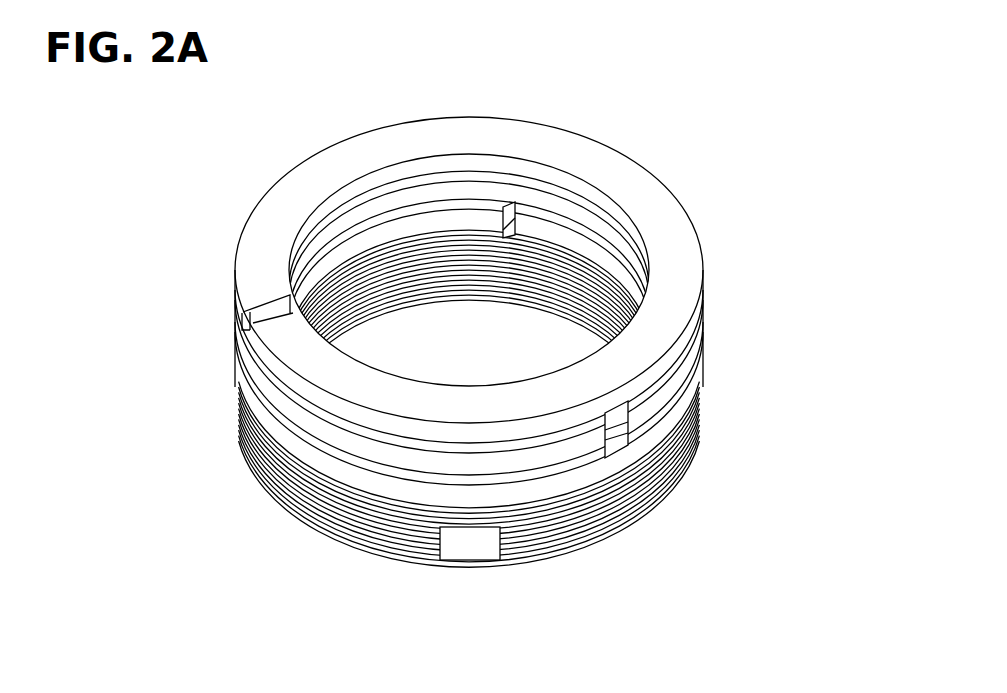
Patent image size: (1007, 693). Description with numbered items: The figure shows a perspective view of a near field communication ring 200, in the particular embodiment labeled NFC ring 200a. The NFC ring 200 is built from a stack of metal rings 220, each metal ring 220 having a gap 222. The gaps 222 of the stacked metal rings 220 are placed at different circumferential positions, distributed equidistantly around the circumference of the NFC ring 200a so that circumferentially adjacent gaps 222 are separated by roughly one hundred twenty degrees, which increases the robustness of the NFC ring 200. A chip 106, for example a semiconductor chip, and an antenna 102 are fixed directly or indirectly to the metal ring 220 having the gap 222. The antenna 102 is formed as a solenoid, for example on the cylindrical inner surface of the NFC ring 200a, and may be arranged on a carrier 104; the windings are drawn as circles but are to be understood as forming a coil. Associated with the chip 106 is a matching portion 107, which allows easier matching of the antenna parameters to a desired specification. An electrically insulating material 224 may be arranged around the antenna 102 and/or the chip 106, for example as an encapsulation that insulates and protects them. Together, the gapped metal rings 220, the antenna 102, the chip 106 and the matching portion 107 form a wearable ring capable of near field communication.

The near field communication ring 200 is at (484, 332).
The NFC ring 200a is at (714, 96).
The metal ring 220 is at (290, 197).
The gap 222 is at (243, 313).
The electrically insulating material 224 is at (472, 178).
The antenna 102 is at (432, 503).
The carrier 104 is at (308, 520).
The chip 106 is at (604, 595).
The matching portion 107 is at (473, 535).